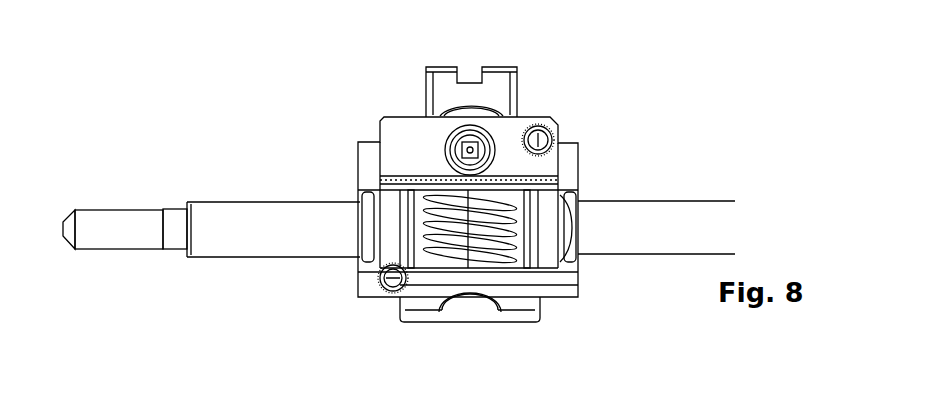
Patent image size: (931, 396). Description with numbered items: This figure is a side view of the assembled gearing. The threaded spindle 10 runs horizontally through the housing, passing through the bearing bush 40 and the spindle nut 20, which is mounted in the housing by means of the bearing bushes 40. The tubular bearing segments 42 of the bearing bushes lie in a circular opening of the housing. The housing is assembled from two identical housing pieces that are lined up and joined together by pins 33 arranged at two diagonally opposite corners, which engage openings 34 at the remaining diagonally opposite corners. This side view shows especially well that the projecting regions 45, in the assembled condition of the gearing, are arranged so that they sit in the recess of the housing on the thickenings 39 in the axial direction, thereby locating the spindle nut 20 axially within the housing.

The threaded spindle 10 is at (695, 218).
The spindle nut 20 is at (510, 240).
The pins 33 is at (540, 136).
The openings 34 is at (553, 133).
The thickenings 39 is at (403, 183).
The bearing bushes 40 is at (407, 217).
The tubular bearing segments 42 is at (572, 228).
The projecting regions 45 is at (412, 193).